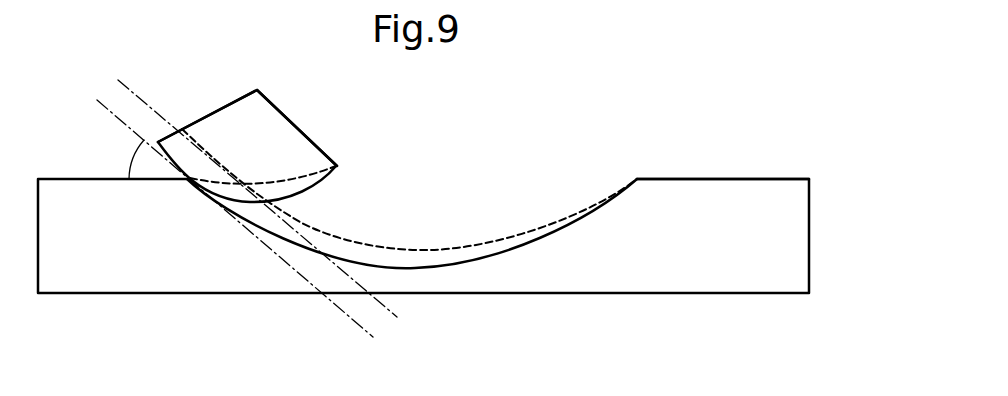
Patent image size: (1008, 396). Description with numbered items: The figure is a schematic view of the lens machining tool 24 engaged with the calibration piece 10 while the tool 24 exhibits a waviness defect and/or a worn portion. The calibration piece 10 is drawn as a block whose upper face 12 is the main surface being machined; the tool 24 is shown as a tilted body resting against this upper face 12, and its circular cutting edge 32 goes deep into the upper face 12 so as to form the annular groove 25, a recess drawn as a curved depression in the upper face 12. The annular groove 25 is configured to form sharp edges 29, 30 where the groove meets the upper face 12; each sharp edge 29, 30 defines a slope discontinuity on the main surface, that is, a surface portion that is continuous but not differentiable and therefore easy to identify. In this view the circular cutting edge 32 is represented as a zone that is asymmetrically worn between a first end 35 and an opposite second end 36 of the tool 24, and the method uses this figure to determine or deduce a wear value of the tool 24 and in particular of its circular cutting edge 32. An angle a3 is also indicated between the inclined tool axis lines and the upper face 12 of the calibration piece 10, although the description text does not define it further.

The calibration piece 10 is at (810, 228).
The upper face 12 is at (757, 178).
The lens machining tool 24 is at (275, 107).
The annular groove 25 is at (522, 145).
The sharp edge 29 is at (637, 178).
The sharp edge 30 is at (188, 180).
The circular cutting edge 32 is at (225, 190).
The first end 35 is at (338, 166).
The second end 36 is at (158, 142).
The angle a3 is at (133, 152).